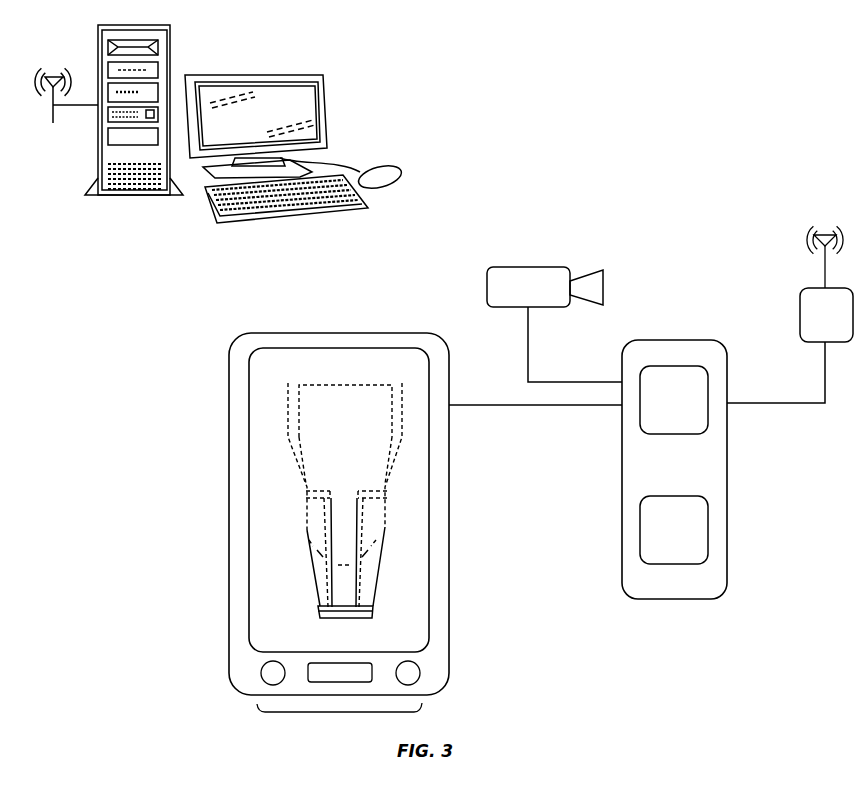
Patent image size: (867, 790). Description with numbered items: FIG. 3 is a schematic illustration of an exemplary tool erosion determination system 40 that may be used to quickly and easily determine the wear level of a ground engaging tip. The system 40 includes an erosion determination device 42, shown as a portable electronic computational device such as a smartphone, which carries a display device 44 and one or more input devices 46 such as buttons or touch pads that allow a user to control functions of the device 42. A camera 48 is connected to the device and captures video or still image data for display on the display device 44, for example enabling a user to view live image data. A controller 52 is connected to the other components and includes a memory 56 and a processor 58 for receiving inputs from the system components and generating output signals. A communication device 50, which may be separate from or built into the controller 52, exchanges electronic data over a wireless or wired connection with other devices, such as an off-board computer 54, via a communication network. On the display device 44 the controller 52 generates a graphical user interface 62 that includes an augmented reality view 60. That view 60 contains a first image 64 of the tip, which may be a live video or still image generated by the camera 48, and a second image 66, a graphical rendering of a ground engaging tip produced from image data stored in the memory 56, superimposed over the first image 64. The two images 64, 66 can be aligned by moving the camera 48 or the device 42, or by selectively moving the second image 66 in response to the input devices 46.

The tool erosion determination system 40 is at (774, 99).
The erosion determination device 42 is at (228, 415).
The display device 44 is at (257, 587).
The input devices 46 is at (340, 712).
The camera 48 is at (533, 267).
The communication device 50 is at (826, 284).
The controller 52 is at (727, 476).
The off-board computer 54 is at (166, 221).
The memory 56 is at (665, 543).
The processor 58 is at (665, 413).
The augmented reality view 60 is at (275, 529).
The graphical user interface 62 is at (284, 629).
The first image 64 is at (377, 585).
The second image 66 is at (387, 473).